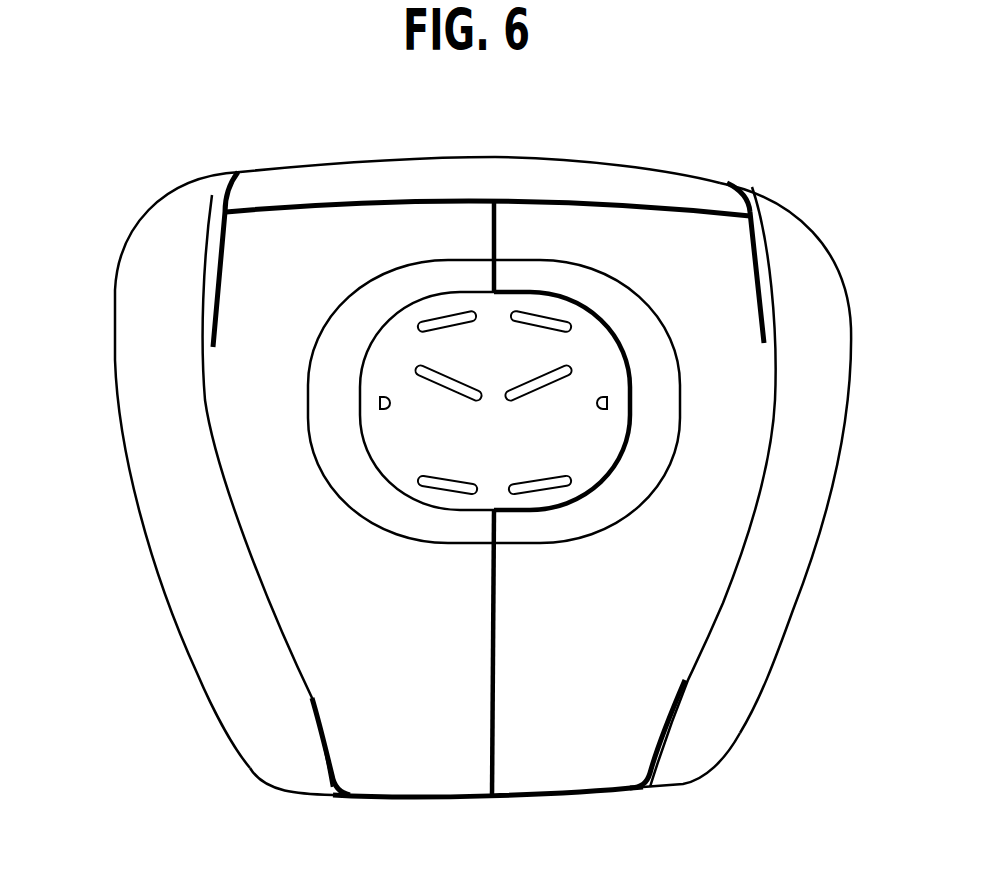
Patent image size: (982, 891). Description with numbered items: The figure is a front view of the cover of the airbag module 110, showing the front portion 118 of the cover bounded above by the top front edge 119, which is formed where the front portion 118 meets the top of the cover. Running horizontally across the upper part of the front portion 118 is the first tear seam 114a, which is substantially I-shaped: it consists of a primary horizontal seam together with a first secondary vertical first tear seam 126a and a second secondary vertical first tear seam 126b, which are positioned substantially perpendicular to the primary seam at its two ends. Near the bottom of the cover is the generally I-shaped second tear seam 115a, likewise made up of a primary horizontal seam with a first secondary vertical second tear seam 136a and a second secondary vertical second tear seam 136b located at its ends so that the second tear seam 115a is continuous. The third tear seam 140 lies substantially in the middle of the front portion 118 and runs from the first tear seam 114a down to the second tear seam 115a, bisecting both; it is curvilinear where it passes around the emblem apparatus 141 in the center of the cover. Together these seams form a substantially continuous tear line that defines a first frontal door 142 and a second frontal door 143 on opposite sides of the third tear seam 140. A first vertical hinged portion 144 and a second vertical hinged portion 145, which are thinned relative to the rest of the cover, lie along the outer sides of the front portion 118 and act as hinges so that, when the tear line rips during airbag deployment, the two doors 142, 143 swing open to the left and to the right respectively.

The module 110 is at (128, 146).
The first tear seam 114a is at (283, 208).
The second tear seam 115a is at (383, 797).
The front portion 118 is at (685, 272).
The top front edge 119 is at (483, 178).
The first secondary vertical first tear seam 126a is at (760, 203).
The second secondary vertical first tear seam 126b is at (210, 310).
The first secondary vertical second tear seam 136a is at (668, 733).
The second secondary vertical second tear seam 136b is at (320, 733).
The third tear seam 140 is at (495, 660).
The emblem apparatus 141 is at (495, 378).
The first frontal door 142 is at (275, 512).
The second frontal door 143 is at (678, 568).
The first vertical hinged portion 144 is at (240, 615).
The second vertical hinged portion 145 is at (758, 490).